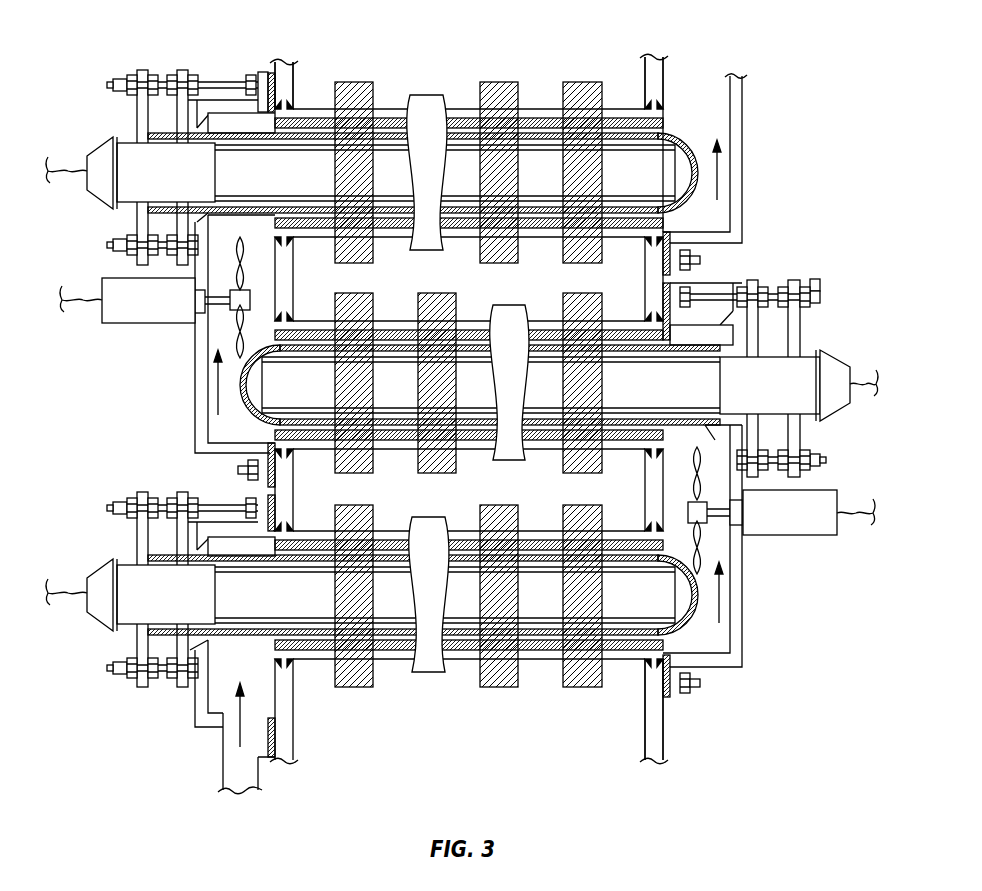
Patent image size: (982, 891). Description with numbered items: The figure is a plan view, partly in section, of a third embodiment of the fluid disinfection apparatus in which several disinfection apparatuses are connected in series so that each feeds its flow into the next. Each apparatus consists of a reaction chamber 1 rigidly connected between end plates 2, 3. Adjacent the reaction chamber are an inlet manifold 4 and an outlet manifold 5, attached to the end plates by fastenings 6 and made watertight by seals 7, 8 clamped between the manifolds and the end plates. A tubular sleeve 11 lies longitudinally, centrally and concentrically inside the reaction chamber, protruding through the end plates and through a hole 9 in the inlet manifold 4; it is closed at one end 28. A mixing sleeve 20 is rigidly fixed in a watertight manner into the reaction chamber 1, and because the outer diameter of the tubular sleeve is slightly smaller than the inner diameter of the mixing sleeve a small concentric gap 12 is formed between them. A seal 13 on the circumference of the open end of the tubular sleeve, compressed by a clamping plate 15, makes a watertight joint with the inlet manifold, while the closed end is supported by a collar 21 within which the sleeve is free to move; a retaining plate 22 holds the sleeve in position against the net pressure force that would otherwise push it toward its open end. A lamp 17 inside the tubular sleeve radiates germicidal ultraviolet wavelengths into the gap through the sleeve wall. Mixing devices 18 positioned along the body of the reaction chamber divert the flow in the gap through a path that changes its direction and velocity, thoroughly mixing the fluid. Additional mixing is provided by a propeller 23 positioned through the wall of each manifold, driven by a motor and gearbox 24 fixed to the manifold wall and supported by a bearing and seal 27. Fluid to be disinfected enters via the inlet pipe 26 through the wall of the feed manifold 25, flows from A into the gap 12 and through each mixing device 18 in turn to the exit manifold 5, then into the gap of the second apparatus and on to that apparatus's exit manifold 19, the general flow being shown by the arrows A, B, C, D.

The reaction chamber 1 is at (302, 118).
The end plate 2 is at (655, 62).
The end plate 3 is at (283, 62).
The inlet manifold 4 is at (196, 430).
The outlet manifold 5 is at (744, 102).
The fastenings 6 is at (697, 262).
The seal 7 is at (665, 680).
The seal 8 is at (272, 482).
The hole 9 is at (207, 212).
The tubular sleeve 11 is at (412, 135).
The gap 12 is at (556, 214).
The seal 13 is at (200, 128).
The clamping plate 15 is at (186, 70).
The lamp 17 is at (452, 182).
The mixing device 18 is at (357, 90).
The exit manifold 19 is at (737, 625).
The mixing sleeve 20 is at (530, 122).
The collar 21 is at (668, 138).
The retaining plate 22 is at (147, 70).
The propeller 23 is at (247, 298).
The motor and gearbox 24 is at (140, 322).
The feed manifold 25 is at (200, 705).
The inlet pipe 26 is at (232, 770).
The bearing and seal 27 is at (198, 312).
The closed end 28 is at (700, 148).
The arrow A is at (245, 722).
The arrow B is at (722, 586).
The arrow C is at (212, 392).
The arrow D is at (742, 168).